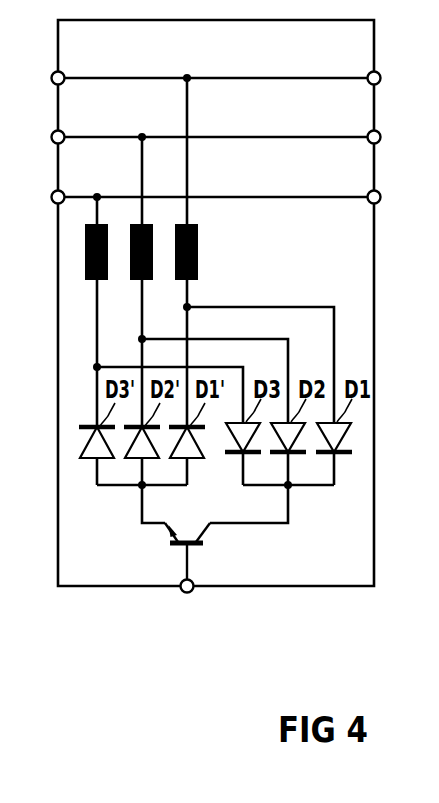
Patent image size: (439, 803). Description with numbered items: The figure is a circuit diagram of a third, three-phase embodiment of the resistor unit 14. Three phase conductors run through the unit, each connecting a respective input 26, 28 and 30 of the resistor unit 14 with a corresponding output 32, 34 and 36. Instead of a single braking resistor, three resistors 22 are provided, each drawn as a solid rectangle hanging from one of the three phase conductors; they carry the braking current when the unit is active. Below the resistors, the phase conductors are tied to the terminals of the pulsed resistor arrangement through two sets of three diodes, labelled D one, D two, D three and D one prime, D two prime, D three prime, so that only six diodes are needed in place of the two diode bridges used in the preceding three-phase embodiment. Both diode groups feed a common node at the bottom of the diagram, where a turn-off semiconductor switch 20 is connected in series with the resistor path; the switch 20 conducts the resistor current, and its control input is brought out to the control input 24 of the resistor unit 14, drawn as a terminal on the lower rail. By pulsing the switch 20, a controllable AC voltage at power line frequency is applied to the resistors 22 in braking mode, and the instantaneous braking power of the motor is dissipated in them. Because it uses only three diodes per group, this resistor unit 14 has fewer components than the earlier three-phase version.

The resistor unit 14 is at (374, 358).
The turn-off semiconductor switch 20 is at (182, 550).
The resistor 22 is at (233, 215).
The control input 24 is at (187, 593).
The input 26 is at (53, 68).
The input 28 is at (53, 127).
The input 30 is at (53, 187).
The output 32 is at (380, 74).
The output 34 is at (380, 133).
The output 36 is at (380, 193).